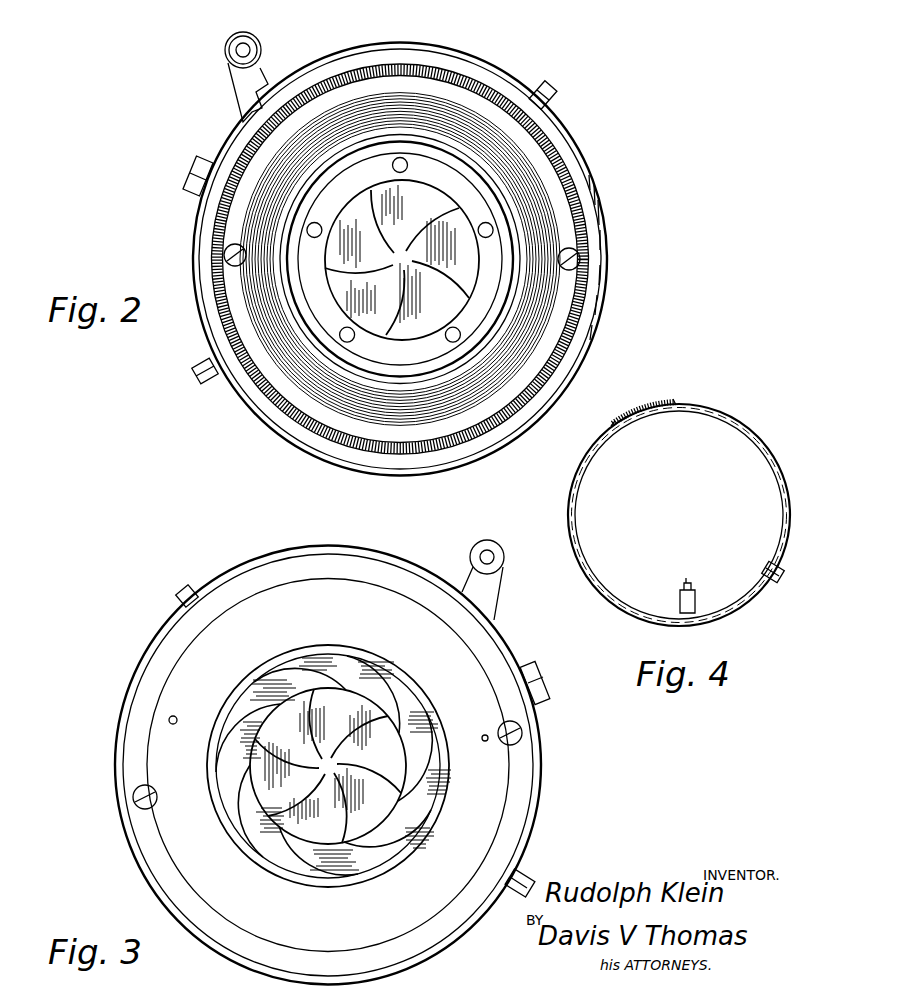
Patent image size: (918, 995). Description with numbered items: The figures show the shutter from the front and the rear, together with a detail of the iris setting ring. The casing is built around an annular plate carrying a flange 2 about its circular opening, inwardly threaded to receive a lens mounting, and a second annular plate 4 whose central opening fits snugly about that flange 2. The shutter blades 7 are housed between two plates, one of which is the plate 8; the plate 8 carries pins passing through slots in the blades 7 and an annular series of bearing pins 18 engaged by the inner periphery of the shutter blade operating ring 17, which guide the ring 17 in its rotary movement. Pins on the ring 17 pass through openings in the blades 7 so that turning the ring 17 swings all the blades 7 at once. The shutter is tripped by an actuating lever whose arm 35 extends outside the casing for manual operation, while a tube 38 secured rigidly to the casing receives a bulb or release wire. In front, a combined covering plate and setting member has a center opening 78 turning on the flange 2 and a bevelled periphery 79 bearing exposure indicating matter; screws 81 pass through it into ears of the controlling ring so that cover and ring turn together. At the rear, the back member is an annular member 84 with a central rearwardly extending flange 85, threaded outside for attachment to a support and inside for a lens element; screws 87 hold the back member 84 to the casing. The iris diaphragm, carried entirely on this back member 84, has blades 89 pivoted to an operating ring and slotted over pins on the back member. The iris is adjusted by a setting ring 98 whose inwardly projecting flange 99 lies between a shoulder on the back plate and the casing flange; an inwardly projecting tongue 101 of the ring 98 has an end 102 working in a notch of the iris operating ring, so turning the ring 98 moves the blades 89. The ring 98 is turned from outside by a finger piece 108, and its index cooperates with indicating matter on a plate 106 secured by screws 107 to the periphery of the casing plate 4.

In FIG. 2, the flange 2 is at (327, 343).
In FIG. 2, the annular plate 4 is at (606, 253).
In FIG. 2, the shutter blades 7 is at (363, 245).
In FIG. 3, the shutter blades 7 is at (327, 823).
In FIG. 2, the plate 8 is at (382, 347).
In FIG. 2, the shutter blade operating ring 17 is at (397, 363).
In FIG. 2, the bearing pins 18 is at (452, 334).
In FIG. 2, the arm 35 is at (243, 80).
In FIG. 3, the arm 35 is at (495, 587).
In FIG. 2, the tube 38 is at (191, 174).
In FIG. 3, the tube 38 is at (543, 693).
In FIG. 2, the center opening 78 is at (505, 210).
In FIG. 2, the bevelled periphery 79 is at (578, 173).
In FIG. 2, the screws 81 is at (226, 252).
In FIG. 3, the annular member 84 is at (195, 648).
In FIG. 3, the central rearwardly extending flange 85 is at (228, 699).
In FIG. 3, the screws 87 is at (522, 738).
In FIG. 3, the iris blades 89 is at (250, 840).
In FIG. 2, the setting ring 98 is at (614, 233).
In FIG. 3, the setting ring 98 is at (545, 757).
In FIG. 4, the setting ring 98 is at (652, 404).
In FIG. 4, the inwardly projecting flange 99 is at (712, 418).
In FIG. 4, the tongue 101 is at (697, 600).
In FIG. 4, the end 102 is at (687, 583).
In FIG. 2, the plate 106 is at (348, 36).
In FIG. 3, the plate 106 is at (252, 562).
In FIG. 2, the screws 107 is at (557, 92).
In FIG. 3, the screws 107 is at (185, 595).
In FIG. 2, the finger piece 108 is at (197, 382).
In FIG. 3, the finger piece 108 is at (522, 884).
In FIG. 4, the finger piece 108 is at (773, 582).